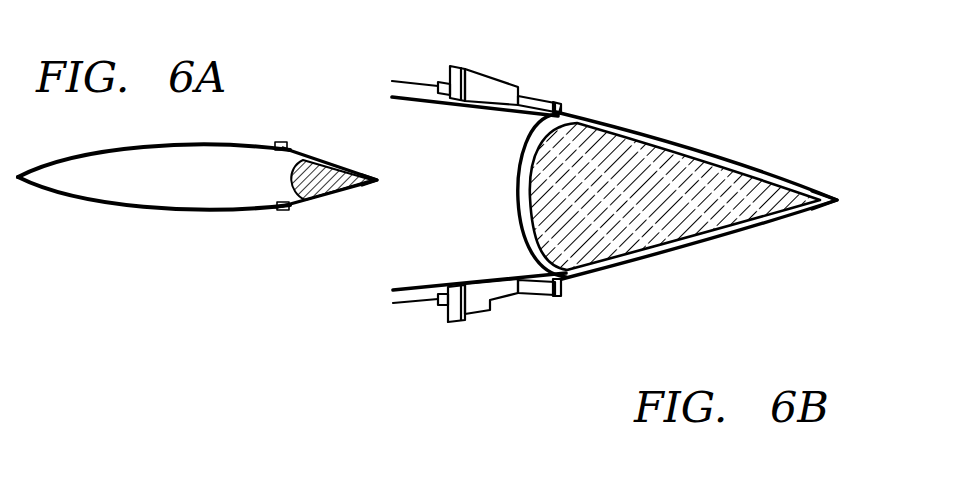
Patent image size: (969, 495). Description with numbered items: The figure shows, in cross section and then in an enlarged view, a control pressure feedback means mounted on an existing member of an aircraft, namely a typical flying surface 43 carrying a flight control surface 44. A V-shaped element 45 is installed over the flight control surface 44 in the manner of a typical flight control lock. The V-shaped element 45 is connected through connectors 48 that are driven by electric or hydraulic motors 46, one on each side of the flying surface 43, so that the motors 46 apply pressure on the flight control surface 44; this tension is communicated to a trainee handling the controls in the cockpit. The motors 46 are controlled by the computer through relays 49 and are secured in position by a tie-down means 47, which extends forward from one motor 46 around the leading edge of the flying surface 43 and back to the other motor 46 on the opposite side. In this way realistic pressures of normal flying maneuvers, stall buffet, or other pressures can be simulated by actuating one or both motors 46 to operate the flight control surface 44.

In FIG. 6A, the flying surface 43 is at (124, 194).
In FIG. 6B, the flying surface 43 is at (395, 308).
In FIG. 6A, the flight control surface 44 is at (338, 192).
In FIG. 6B, the flight control surface 44 is at (707, 215).
In FIG. 6A, the V-shaped element 45 is at (378, 184).
In FIG. 6B, the V-shaped element 45 is at (805, 187).
In FIG. 6A, the motor 46 is at (288, 147).
In FIG. 6B, the motor 46 is at (490, 92).
In FIG. 6A, the tie-down means 47 is at (77, 157).
In FIG. 6B, the tie-down means 47 is at (418, 81).
In FIG. 6A, the connector 48 is at (348, 164).
In FIG. 6B, the connector 48 is at (632, 125).
In FIG. 6A, the relay 49 is at (272, 210).